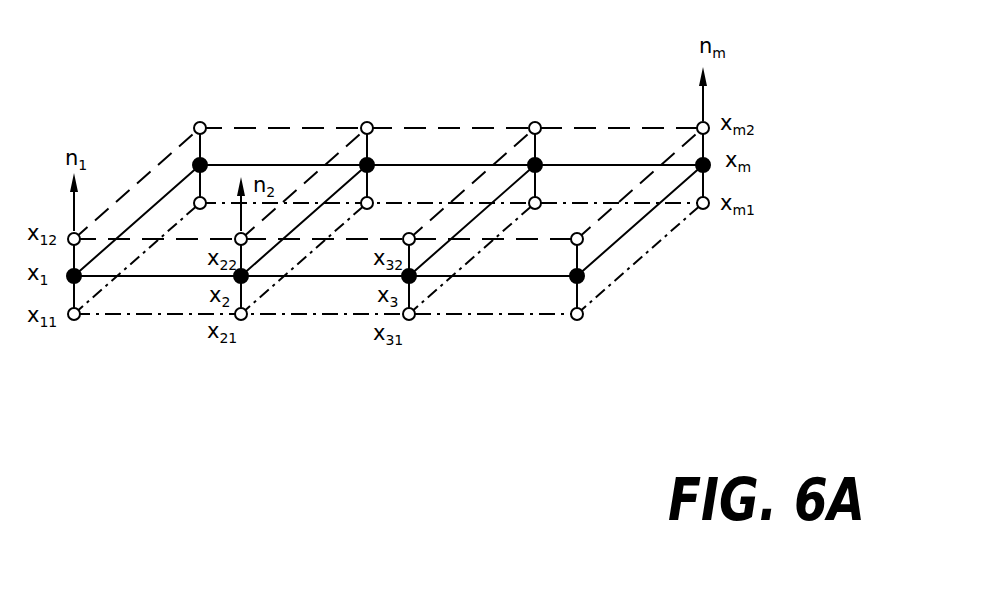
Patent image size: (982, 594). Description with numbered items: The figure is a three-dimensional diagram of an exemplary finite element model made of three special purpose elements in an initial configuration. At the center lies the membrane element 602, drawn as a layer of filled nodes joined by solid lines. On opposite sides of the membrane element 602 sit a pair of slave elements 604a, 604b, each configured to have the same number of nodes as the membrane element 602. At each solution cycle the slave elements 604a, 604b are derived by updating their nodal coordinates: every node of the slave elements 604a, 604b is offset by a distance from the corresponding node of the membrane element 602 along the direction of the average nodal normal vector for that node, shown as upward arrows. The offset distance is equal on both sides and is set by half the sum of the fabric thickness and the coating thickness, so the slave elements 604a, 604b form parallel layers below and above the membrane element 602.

The membrane element 602 is at (600, 263).
The first slave element 604a is at (593, 311).
The second slave element 604b is at (605, 218).